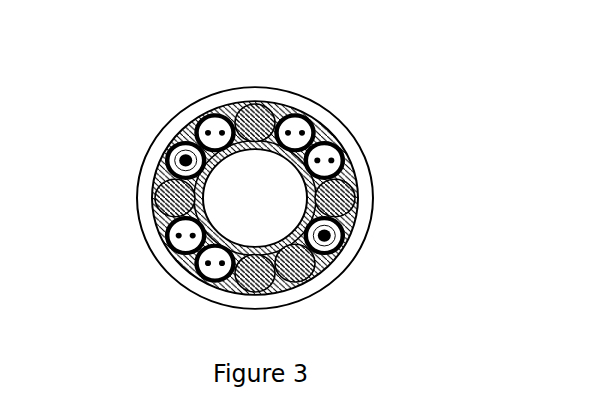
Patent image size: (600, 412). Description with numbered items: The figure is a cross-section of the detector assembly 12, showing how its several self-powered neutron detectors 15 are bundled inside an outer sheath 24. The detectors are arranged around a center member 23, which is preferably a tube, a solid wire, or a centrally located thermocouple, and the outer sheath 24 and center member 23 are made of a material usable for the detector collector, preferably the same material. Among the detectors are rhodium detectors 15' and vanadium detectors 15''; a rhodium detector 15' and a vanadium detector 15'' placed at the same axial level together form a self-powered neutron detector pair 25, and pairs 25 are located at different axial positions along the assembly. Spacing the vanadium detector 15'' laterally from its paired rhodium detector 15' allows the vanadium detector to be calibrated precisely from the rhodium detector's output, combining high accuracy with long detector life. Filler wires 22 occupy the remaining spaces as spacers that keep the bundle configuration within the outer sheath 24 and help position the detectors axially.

The detector assembly 12 is at (437, 181).
The self-powered neutron detector 15 is at (343, 140).
The rhodium detector 15' is at (139, 172).
The vanadium detector 15'' is at (375, 233).
The filler wire 22 is at (268, 112).
The center member 23 is at (315, 252).
The outer sheath 24 is at (368, 172).
The self-powered neutron detector pair 25 is at (177, 258).